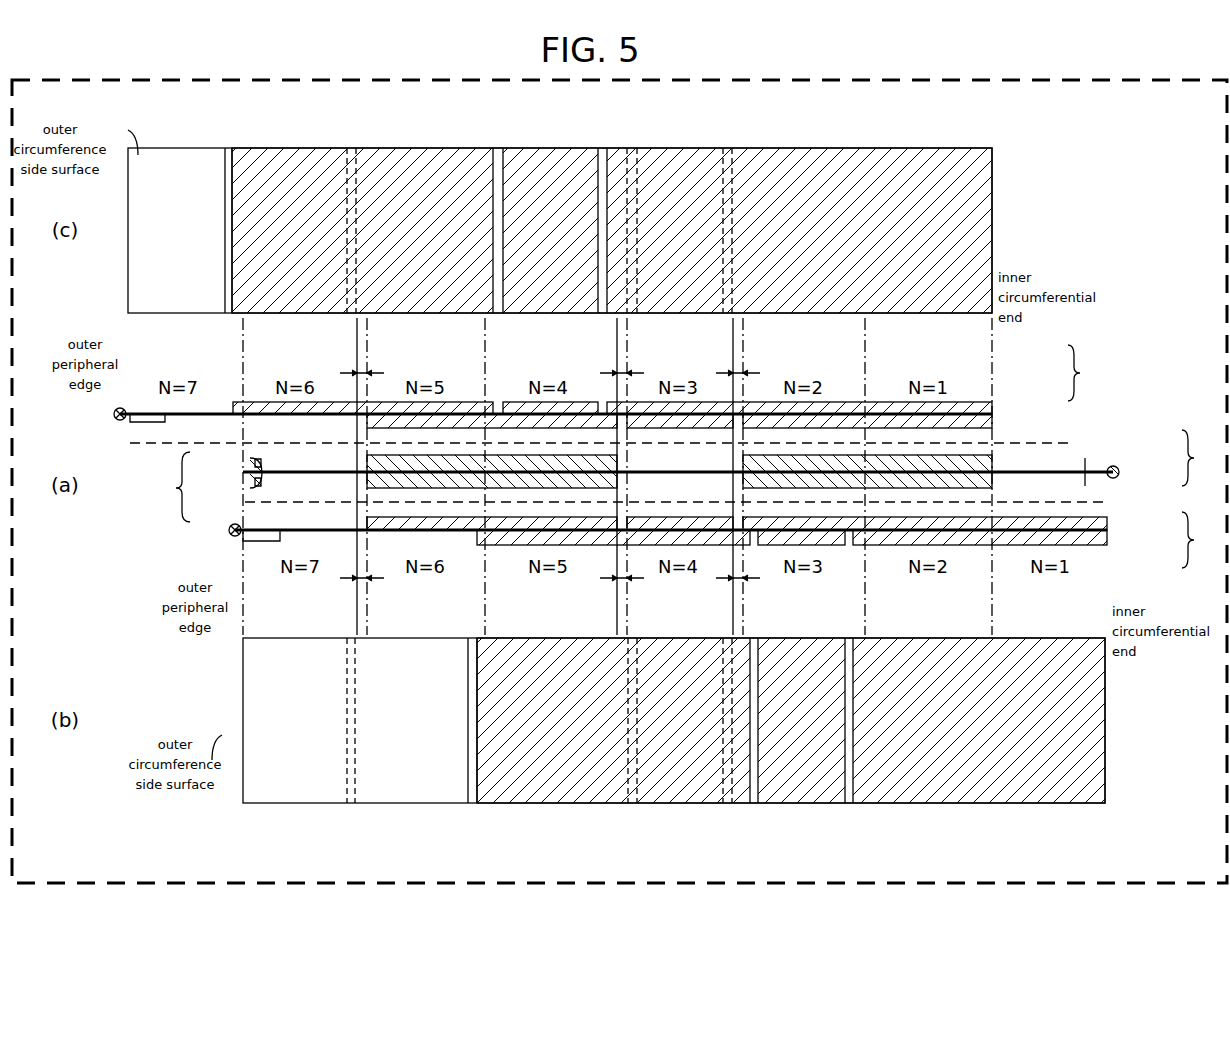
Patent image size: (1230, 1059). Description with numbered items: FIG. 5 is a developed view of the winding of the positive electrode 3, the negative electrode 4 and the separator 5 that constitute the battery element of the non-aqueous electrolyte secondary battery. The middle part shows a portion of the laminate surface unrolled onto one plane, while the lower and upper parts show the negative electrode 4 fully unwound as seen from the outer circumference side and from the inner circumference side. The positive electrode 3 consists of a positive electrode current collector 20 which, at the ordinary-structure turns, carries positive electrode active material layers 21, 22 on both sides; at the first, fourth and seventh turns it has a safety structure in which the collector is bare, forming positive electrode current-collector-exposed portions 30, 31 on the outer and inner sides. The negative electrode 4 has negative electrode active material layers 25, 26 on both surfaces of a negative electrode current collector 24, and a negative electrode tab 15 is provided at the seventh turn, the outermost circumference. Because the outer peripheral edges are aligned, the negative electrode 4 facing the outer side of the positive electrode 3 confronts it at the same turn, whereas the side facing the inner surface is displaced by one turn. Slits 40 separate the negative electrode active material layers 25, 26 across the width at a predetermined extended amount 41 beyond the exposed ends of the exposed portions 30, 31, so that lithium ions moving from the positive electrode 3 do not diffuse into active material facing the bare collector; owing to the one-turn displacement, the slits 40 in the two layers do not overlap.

The positive electrode 3 is at (682, 476).
The negative electrode 4 is at (1137, 456).
The separator 5 is at (150, 444).
The negative electrode tab 15 is at (120, 420).
The positive electrode current collector 20 is at (247, 476).
The positive electrode active material layer 21 is at (1010, 468).
The positive electrode active material layer 22 is at (995, 456).
The negative electrode current collector 24 is at (985, 418).
The negative electrode active material layer 25 is at (1100, 715).
The negative electrode active material layer 26 is at (985, 200).
The positive electrode current-collector-exposed portion 30 is at (253, 485).
The positive electrode current-collector-exposed portion 31 is at (253, 455).
The slit 40 is at (498, 148).
The predetermined extended amount 41 is at (362, 373).